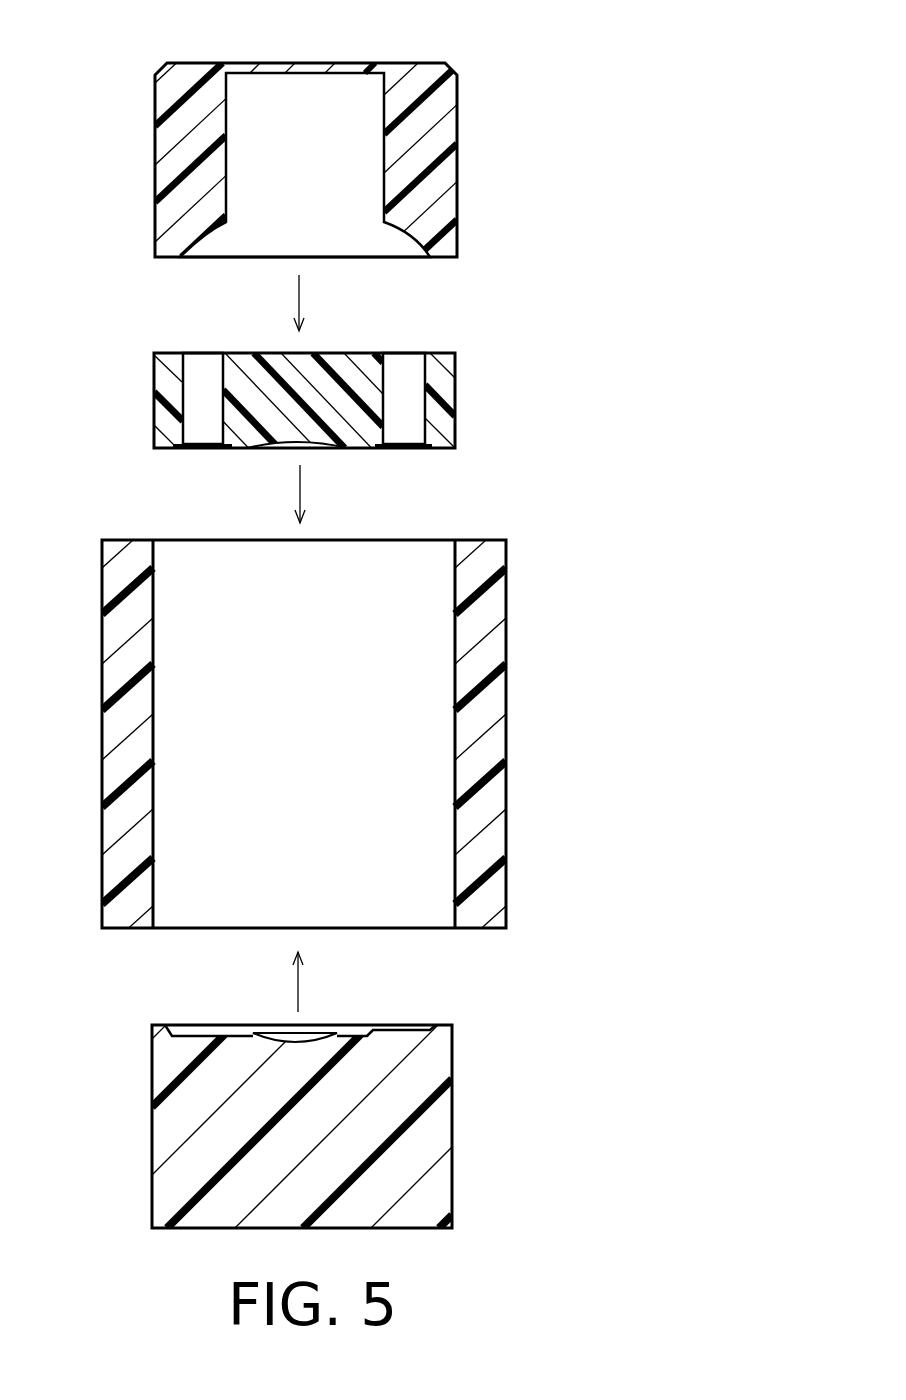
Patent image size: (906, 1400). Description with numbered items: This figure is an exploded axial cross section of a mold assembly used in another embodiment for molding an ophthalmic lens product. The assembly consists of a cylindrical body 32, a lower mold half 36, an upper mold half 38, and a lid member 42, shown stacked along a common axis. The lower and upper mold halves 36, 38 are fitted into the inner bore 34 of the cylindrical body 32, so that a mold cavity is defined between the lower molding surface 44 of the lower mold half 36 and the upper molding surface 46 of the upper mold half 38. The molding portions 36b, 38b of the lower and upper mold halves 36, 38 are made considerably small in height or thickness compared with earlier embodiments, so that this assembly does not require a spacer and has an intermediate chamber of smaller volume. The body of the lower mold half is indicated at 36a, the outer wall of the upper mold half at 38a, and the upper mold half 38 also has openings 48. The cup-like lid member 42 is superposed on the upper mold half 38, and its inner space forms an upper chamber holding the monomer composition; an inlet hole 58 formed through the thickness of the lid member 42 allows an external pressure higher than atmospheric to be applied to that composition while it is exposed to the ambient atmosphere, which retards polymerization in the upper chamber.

The cylindrical body 32 is at (371, 709).
The inner bore 34 is at (153, 598).
The lower mold half 36 is at (320, 1097).
The base body portion 36a is at (183, 1157).
The molding portion 36b is at (240, 1036).
The upper mold half 38 is at (321, 405).
The outer wall of disc 38a is at (165, 412).
The molding portion 38b is at (238, 449).
The lid member 42 is at (354, 133).
The lower molding surface 44 is at (313, 1033).
The upper molding surface 46 is at (313, 449).
The apertures in disc 48 is at (185, 373).
The inlet hole 58 is at (307, 66).